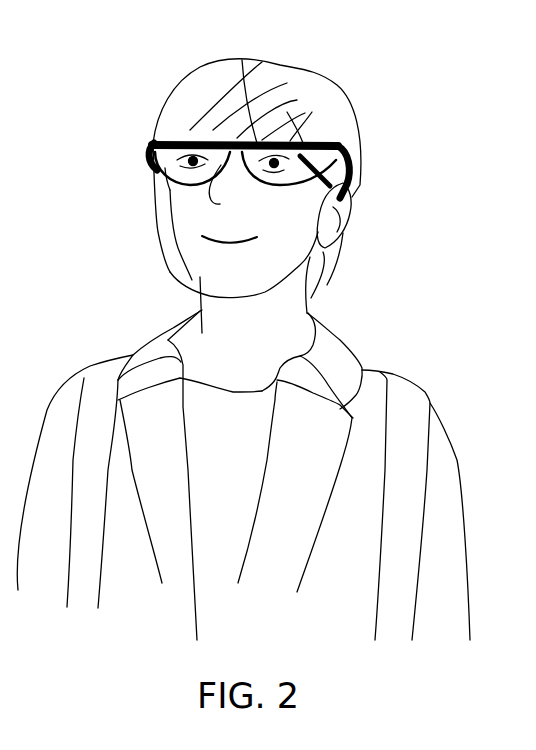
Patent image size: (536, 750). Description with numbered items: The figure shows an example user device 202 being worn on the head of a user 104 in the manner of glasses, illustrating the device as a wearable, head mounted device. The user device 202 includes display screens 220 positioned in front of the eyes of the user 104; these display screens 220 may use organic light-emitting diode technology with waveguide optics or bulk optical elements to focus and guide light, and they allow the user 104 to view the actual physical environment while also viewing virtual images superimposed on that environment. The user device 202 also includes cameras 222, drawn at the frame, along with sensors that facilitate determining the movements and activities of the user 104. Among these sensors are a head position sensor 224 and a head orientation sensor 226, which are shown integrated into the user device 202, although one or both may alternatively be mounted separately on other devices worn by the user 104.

The user 104 is at (350, 357).
The user device 202 is at (315, 103).
The display screens 220 is at (246, 142).
The cameras 222 is at (156, 146).
The head position sensor 224 is at (367, 186).
The head orientation sensor 226 is at (262, 62).